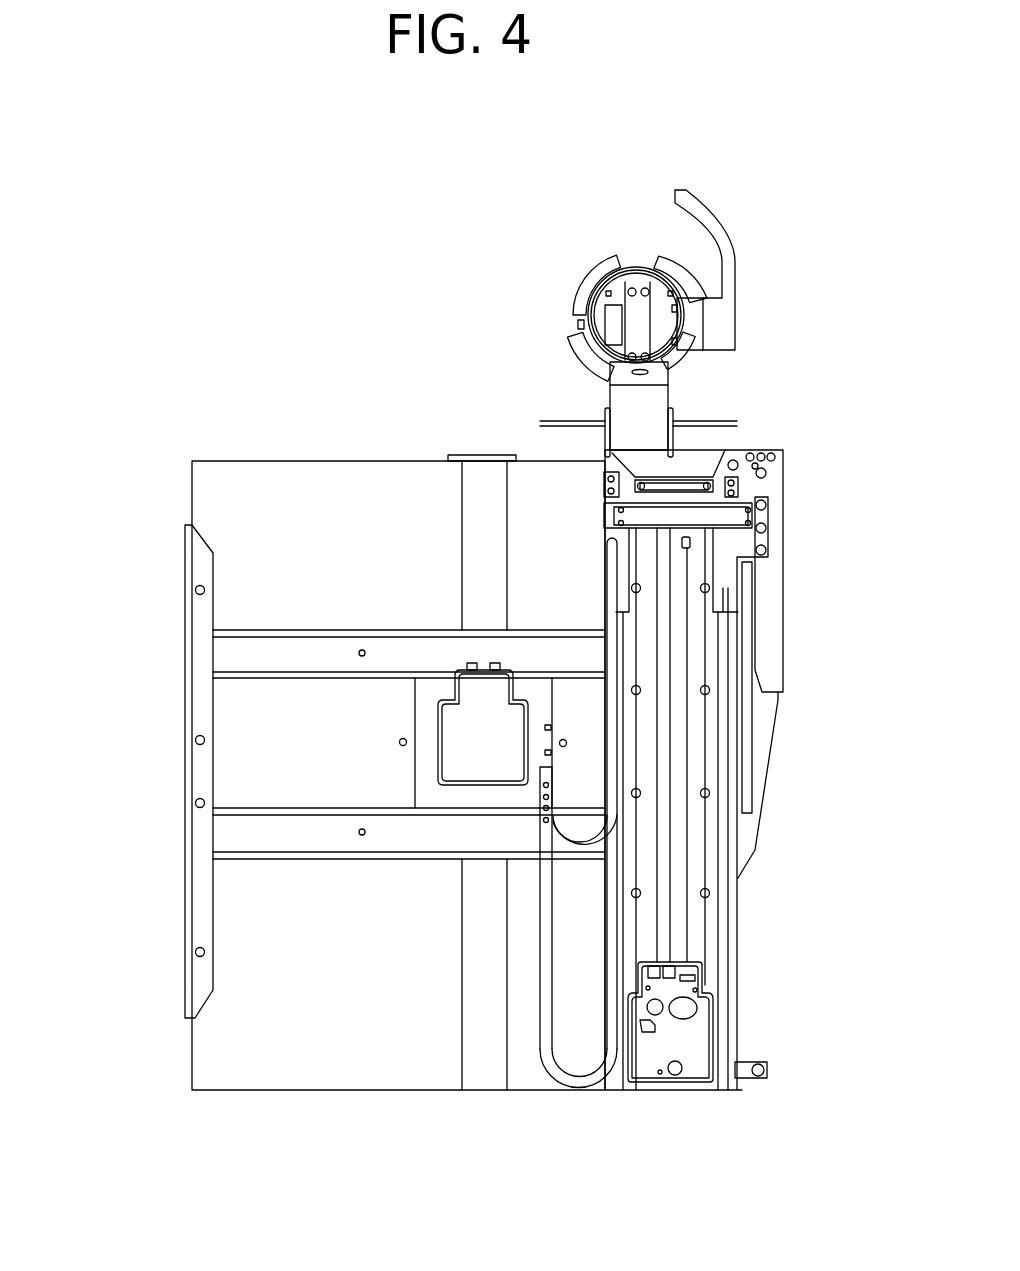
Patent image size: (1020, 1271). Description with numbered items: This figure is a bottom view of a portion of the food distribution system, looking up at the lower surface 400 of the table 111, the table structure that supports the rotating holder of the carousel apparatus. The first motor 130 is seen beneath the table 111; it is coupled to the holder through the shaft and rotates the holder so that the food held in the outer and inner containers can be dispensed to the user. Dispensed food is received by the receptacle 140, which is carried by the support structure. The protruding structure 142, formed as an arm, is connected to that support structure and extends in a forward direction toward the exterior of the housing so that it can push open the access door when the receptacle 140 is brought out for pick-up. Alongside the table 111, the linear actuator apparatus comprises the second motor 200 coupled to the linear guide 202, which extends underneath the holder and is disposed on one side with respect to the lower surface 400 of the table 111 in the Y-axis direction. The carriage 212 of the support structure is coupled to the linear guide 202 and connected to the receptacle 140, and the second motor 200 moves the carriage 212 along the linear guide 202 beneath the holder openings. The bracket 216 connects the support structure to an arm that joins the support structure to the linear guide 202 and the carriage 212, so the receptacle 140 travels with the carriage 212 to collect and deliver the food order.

The table 111 is at (190, 503).
The first motor 130 is at (462, 723).
The receptacle 140 is at (573, 287).
The protruding structure 142 is at (737, 253).
The second motor 200 is at (695, 1032).
The linear guide 202 is at (690, 725).
The carriage 212 is at (737, 540).
The bracket 216 is at (647, 405).
The lower surface 400 is at (368, 565).